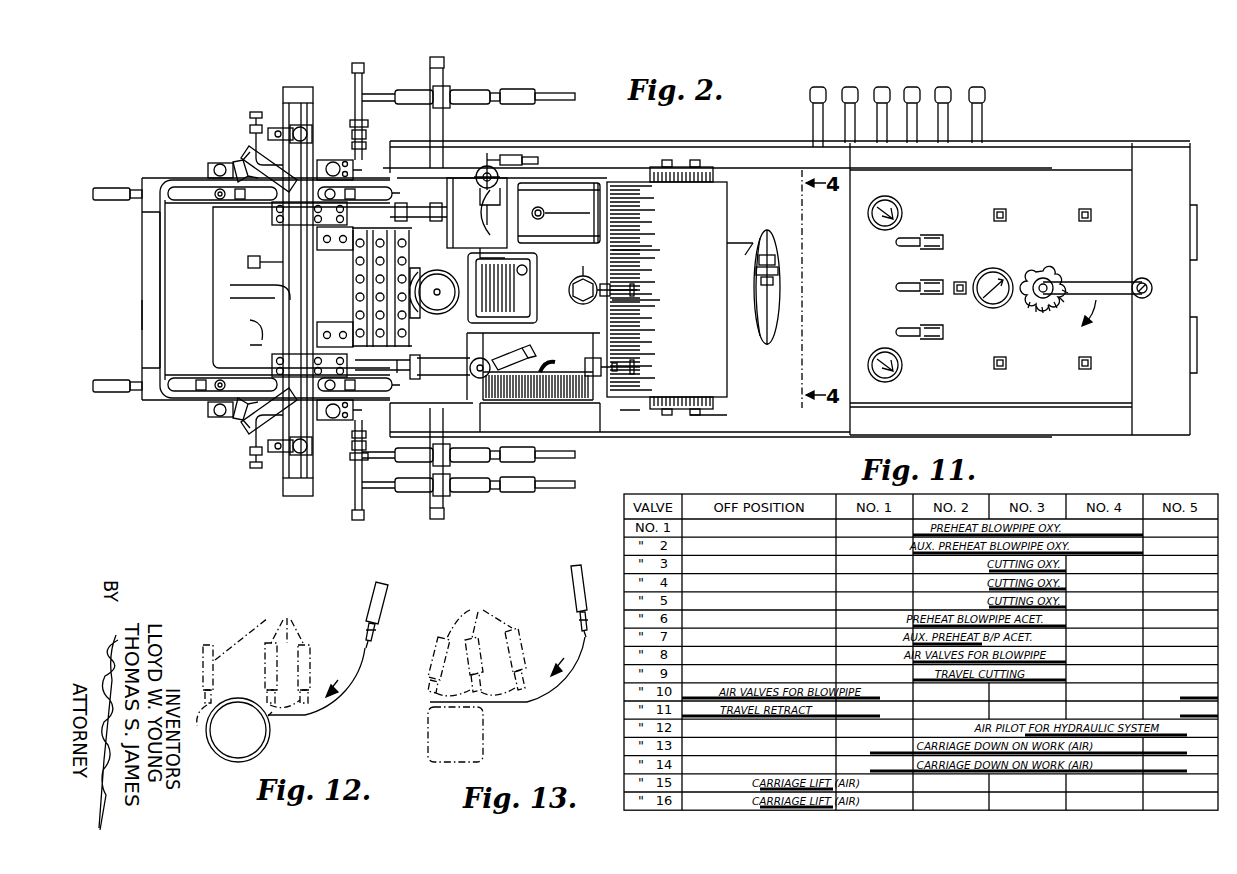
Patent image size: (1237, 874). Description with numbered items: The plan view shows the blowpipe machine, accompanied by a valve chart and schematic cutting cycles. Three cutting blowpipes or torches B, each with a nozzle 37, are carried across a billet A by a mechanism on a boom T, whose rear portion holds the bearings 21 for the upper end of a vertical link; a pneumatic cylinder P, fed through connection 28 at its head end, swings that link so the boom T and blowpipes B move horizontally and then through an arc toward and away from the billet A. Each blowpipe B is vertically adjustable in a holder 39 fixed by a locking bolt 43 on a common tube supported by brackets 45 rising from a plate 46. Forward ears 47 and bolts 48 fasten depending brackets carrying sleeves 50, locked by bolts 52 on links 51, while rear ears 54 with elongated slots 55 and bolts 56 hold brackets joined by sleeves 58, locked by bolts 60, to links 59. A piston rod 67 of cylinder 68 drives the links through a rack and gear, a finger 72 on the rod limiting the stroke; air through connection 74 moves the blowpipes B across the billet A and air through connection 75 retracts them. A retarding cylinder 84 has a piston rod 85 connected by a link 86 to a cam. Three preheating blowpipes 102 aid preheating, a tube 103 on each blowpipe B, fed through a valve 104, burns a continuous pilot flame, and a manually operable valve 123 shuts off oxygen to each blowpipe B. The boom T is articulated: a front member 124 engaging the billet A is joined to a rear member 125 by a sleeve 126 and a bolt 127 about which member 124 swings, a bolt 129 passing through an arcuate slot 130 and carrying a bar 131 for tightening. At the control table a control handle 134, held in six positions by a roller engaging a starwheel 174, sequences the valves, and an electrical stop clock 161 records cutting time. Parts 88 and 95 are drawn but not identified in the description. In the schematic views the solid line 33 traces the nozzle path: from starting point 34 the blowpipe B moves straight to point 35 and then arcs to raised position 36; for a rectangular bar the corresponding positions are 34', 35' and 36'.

In FIG. 2, the bearings 21 is at (683, 170).
In FIG. 2, the connection 28 is at (781, 262).
In FIG. 12, the solid line 33 is at (341, 660).
In FIG. 13, the solid line 33 is at (538, 684).
In FIG. 12, the point 34 is at (286, 732).
In FIG. 13, the square cut 34' is at (475, 732).
In FIG. 12, the point 35 is at (312, 722).
In FIG. 13, the position 35' is at (497, 720).
In FIG. 12, the position 36 is at (381, 663).
In FIG. 13, the position 36' is at (598, 656).
In FIG. 12, the nozzle 37 is at (378, 640).
In FIG. 13, the nozzle 37 is at (580, 620).
In FIG. 2, the holder 39 is at (278, 127).
In FIG. 2, the locking bolt 43 is at (305, 148).
In FIG. 2, the brackets 45 is at (290, 224).
In FIG. 2, the plate 46 is at (175, 240).
In FIG. 2, the ear 47 is at (208, 168).
In FIG. 2, the bolt 48 is at (215, 165).
In FIG. 2, the sleeve member 50 is at (213, 197).
In FIG. 2, the link 51 is at (221, 200).
In FIG. 2, the bolt 52 is at (242, 200).
In FIG. 2, the ears 54 is at (358, 190).
In FIG. 2, the elongated slot 55 is at (312, 134).
In FIG. 2, the bolt 56 is at (366, 128).
In FIG. 2, the sleeve 58 is at (339, 160).
In FIG. 2, the link 59 is at (324, 238).
In FIG. 2, the bolt 60 is at (386, 180).
In FIG. 2, the piston rod 67 is at (455, 376).
In FIG. 2, the cylinder 68 is at (553, 384).
In FIG. 2, the finger 72 is at (421, 372).
In FIG. 2, the connection 74 is at (601, 366).
In FIG. 2, the connection 75 is at (488, 366).
In FIG. 2, the retarding cylinder 84 is at (462, 226).
In FIG. 2, the piston rod 85 is at (440, 168).
In FIG. 2, the link 86 is at (396, 206).
In FIG. 2, the motor 88 is at (562, 184).
In FIG. 2, the valve 95 is at (487, 164).
In FIG. 2, the preheating blowpipes 102 is at (470, 90).
In FIG. 2, the tube 103 is at (252, 129).
In FIG. 2, the valve 104 is at (258, 112).
In FIG. 2, the manually operable valve 123 is at (918, 284).
In FIG. 2, the front member 124 is at (142, 272).
In FIG. 2, the rear member 125 is at (700, 360).
In FIG. 2, the sleeve 126 is at (470, 301).
In FIG. 2, the bolt 127 is at (437, 296).
In FIG. 2, the bolt 129 is at (582, 278).
In FIG. 2, the arcuate slot 130 is at (580, 303).
In FIG. 2, the bar 131 is at (625, 290).
In FIG. 2, the control handle 134 is at (1153, 286).
In FIG. 2, the electrical stop clock 161 is at (988, 276).
In FIG. 2, the starwheel 174 is at (1041, 262).
In FIG. 12, the billet A is at (233, 748).
In FIG. 2, the blowpipes B is at (240, 160).
In FIG. 12, the blowpipes B is at (378, 591).
In FIG. 13, the blowpipes B is at (572, 580).
In FIG. 2, the pneumatic cylinder P is at (745, 252).
In FIG. 2, the boom T is at (142, 312).